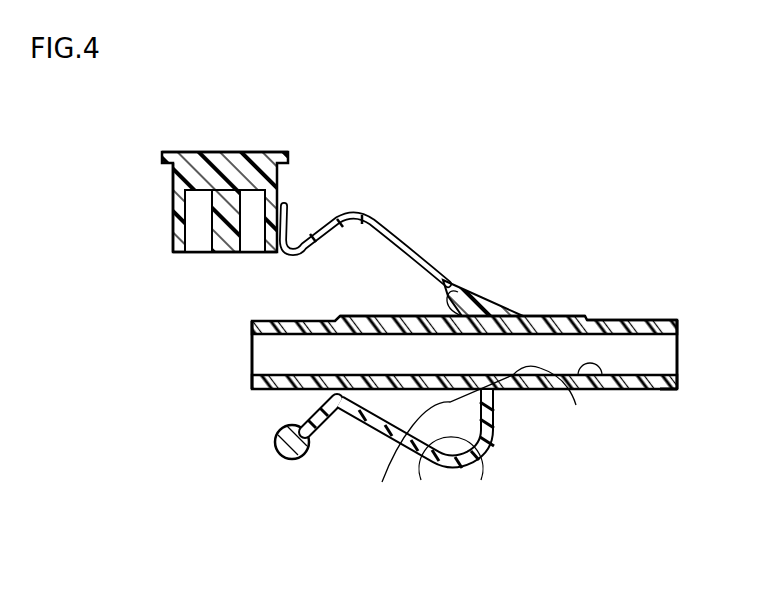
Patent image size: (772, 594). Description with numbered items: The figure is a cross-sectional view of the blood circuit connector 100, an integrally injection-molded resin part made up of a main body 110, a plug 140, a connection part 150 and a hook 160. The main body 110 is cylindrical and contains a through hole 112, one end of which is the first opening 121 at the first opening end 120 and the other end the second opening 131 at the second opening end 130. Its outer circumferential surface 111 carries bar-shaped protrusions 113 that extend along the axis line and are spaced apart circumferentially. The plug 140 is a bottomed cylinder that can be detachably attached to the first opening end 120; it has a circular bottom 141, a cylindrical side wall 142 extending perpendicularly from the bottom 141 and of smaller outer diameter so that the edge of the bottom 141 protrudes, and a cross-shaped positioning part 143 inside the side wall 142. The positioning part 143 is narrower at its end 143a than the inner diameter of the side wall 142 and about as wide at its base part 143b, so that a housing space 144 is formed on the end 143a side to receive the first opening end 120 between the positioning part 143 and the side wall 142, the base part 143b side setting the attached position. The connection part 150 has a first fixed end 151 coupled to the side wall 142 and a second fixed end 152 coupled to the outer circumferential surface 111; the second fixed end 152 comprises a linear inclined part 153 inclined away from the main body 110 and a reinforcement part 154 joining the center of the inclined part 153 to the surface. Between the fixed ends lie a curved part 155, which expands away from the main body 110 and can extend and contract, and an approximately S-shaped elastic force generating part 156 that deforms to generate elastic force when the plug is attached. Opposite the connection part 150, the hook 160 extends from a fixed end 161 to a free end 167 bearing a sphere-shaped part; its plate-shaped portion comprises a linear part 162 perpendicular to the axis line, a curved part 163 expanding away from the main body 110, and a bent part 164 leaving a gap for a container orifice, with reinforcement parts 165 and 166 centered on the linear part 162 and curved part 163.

The blood circuit connector 100 is at (676, 137).
The main body 110 is at (599, 268).
The outer circumferential surface 111 is at (633, 320).
The through hole 112 is at (602, 377).
The bar-shaped protrusions 113 is at (568, 316).
The first opening end 120 is at (252, 389).
The first opening 121 is at (251, 352).
The second opening end 130 is at (679, 384).
The second opening 131 is at (679, 353).
The plug 140 is at (219, 146).
The bottom 141 is at (251, 155).
The side wall 142 is at (173, 182).
The positioning part 143 is at (210, 216).
The end 143a is at (217, 255).
The base part 143b is at (255, 254).
The housing space 144 is at (192, 240).
The connection part 150 is at (406, 213).
The first fixed end 151 is at (287, 200).
The second fixed end 152 is at (525, 240).
The inclined part 153 is at (503, 300).
The reinforcement part 154 is at (456, 293).
The curved part 155 is at (353, 216).
The elastic force generating part 156 is at (296, 226).
The hook 160 is at (453, 491).
The fixed end 161 is at (576, 405).
The linear part 162 is at (497, 418).
The curved part 163 is at (477, 467).
The bent part 164 is at (340, 414).
The reinforcement part 165 is at (391, 440).
The reinforcement part 166 is at (432, 450).
The free end 167 is at (282, 458).